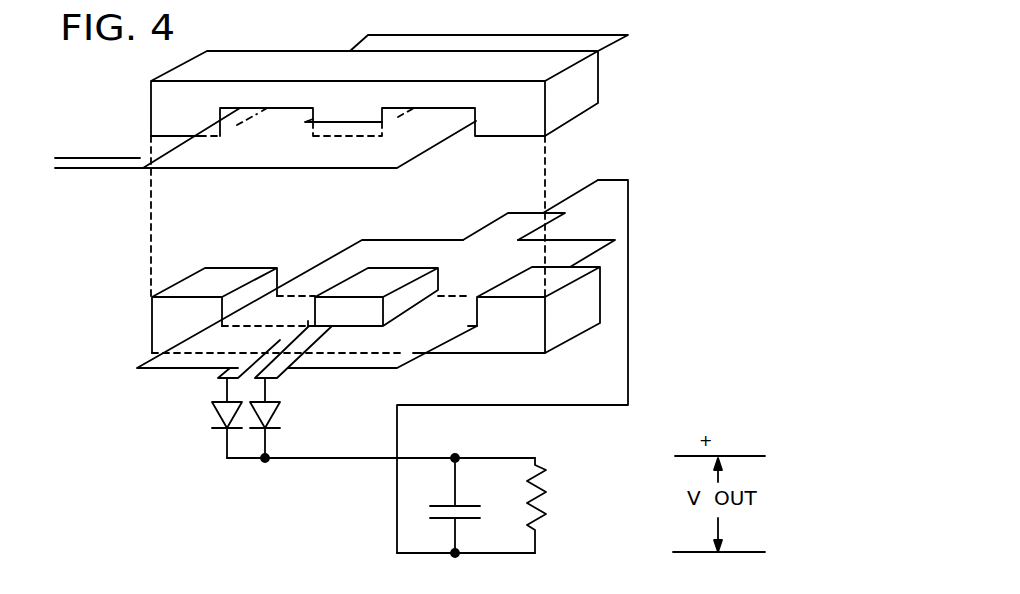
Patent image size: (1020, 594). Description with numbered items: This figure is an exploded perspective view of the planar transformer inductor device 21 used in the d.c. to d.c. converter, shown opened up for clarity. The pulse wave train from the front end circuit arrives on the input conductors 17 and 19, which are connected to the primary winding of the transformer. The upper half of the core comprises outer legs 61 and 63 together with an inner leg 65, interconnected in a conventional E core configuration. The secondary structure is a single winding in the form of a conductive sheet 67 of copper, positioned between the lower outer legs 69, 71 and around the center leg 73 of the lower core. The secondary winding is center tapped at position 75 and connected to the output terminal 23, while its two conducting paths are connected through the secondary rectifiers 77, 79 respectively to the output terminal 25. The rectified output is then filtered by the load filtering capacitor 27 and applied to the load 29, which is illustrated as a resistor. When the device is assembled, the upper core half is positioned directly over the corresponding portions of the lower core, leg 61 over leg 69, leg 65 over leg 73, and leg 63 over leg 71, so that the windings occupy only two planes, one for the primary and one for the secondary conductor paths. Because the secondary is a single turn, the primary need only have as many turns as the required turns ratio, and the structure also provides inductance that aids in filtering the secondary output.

The output conductor 17 is at (115, 157).
The output conductor 19 is at (105, 170).
The planar transformer inductor device 21 is at (263, 209).
The output terminal 23 is at (628, 204).
The output terminal 25 is at (345, 460).
The load filtering capacitor 27 is at (458, 506).
The load 29 is at (540, 510).
The outer leg 61 is at (167, 135).
The outer leg 63 is at (514, 113).
The inner leg 65 is at (345, 128).
The conductive sheet 67 is at (493, 274).
The outer leg 69 is at (172, 322).
The outer leg 71 is at (565, 313).
The center leg 73 is at (372, 292).
The center tap position 75 is at (507, 232).
The secondary rectifier 77 is at (228, 410).
The secondary rectifier 79 is at (265, 410).